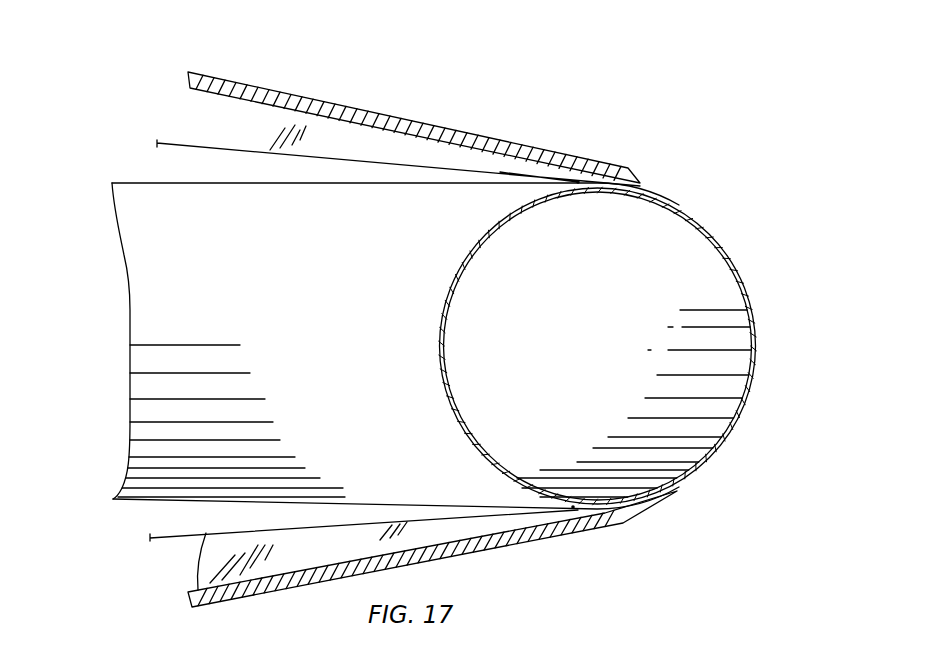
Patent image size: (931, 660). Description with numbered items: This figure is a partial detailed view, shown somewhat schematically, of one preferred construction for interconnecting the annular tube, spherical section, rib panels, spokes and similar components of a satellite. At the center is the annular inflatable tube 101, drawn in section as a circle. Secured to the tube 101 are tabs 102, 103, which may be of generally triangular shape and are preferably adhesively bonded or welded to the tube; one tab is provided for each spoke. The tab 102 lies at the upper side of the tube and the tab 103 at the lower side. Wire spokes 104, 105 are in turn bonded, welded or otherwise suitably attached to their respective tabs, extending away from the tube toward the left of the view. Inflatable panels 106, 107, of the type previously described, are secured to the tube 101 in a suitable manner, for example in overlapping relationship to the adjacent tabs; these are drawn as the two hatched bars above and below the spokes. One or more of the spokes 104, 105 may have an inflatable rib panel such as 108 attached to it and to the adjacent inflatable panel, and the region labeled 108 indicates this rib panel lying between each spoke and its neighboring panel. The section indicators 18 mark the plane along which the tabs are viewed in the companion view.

The section line 18- 18 is at (90, 99).
The annular inflatable tube 101 is at (757, 340).
The tab 102 is at (578, 182).
The tab 103 is at (572, 506).
The wire spoke 104 is at (220, 150).
The wire spoke 105 is at (206, 533).
The inflatable panel 106 is at (395, 120).
The inflatable panel 107 is at (488, 550).
The inflatable rib panel 108 is at (218, 150).